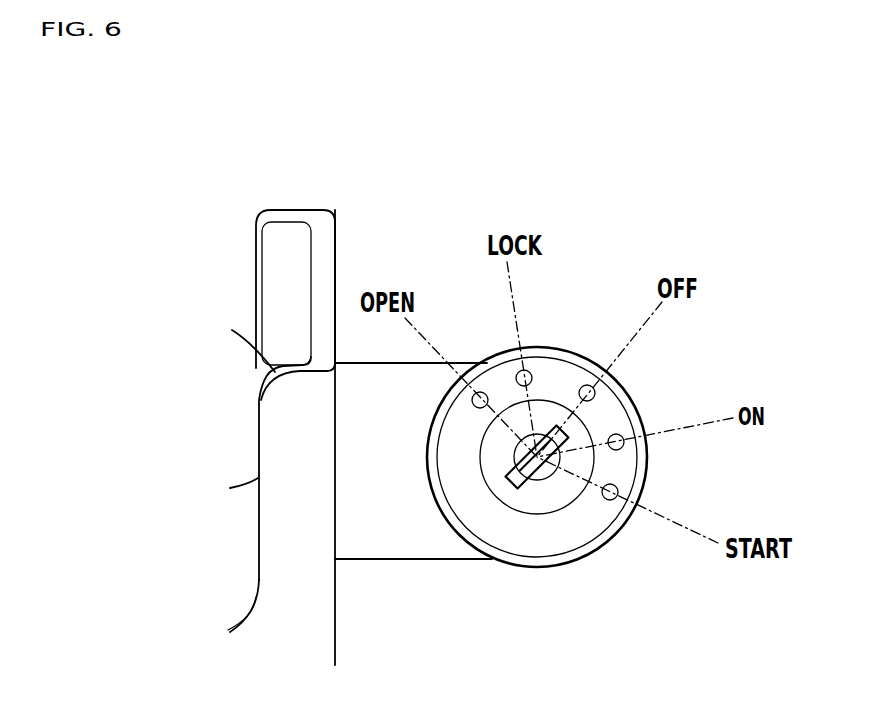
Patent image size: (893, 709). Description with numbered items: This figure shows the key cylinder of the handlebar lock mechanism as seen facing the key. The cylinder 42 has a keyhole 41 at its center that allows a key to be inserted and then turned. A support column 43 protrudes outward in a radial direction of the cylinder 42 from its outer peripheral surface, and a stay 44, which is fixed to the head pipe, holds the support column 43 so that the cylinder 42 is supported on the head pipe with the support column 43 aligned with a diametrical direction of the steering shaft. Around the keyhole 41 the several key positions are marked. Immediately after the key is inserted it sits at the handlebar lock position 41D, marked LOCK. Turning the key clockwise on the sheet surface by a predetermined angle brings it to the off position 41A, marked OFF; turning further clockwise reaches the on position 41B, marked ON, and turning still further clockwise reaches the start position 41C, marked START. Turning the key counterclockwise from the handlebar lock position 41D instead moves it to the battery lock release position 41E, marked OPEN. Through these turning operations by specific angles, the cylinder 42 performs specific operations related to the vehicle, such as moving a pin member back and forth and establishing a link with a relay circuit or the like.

The keyhole 41 is at (518, 485).
The off position 41A is at (586, 385).
The on position 41B is at (620, 450).
The start position 41C is at (609, 500).
The handlebar lock position 41D is at (526, 370).
The battery lock release position 41E is at (480, 392).
The cylinder 42 is at (640, 392).
The support column 43 is at (397, 542).
The stay 44 is at (325, 250).